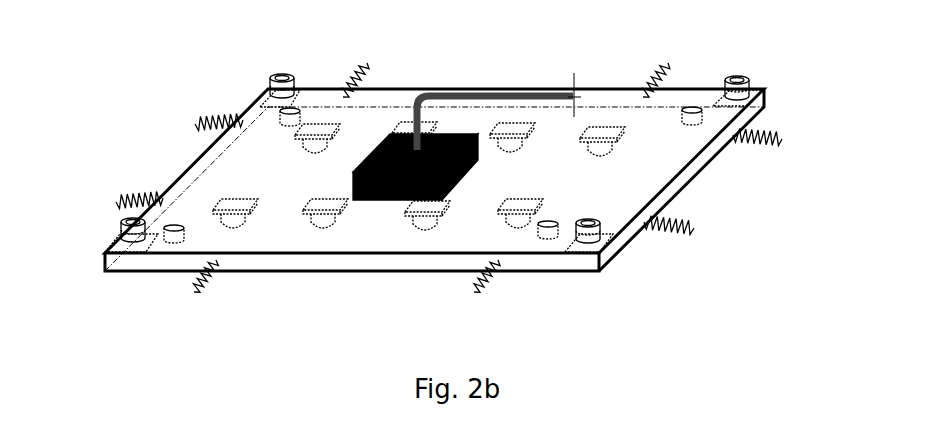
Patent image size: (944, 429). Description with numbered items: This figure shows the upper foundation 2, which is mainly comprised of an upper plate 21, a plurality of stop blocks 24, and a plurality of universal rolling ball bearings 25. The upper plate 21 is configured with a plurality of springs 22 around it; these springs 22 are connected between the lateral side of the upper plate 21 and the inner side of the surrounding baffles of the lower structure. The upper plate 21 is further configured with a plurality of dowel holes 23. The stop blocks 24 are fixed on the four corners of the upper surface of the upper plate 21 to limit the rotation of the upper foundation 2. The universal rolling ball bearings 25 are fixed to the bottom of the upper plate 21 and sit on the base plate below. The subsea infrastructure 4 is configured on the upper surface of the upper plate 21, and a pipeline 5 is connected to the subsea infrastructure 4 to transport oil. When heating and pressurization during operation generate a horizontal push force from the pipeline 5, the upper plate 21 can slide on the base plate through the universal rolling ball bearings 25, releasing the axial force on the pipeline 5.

The upper foundation 2 is at (155, 133).
The subsea infrastructure 4 is at (370, 155).
The pipeline 5 is at (557, 90).
The upper plate 21 is at (703, 170).
The springs 22 is at (697, 232).
The dowel holes 23 is at (553, 247).
The stop blocks 24 is at (735, 73).
The universal rolling ball bearings 25 is at (247, 227).